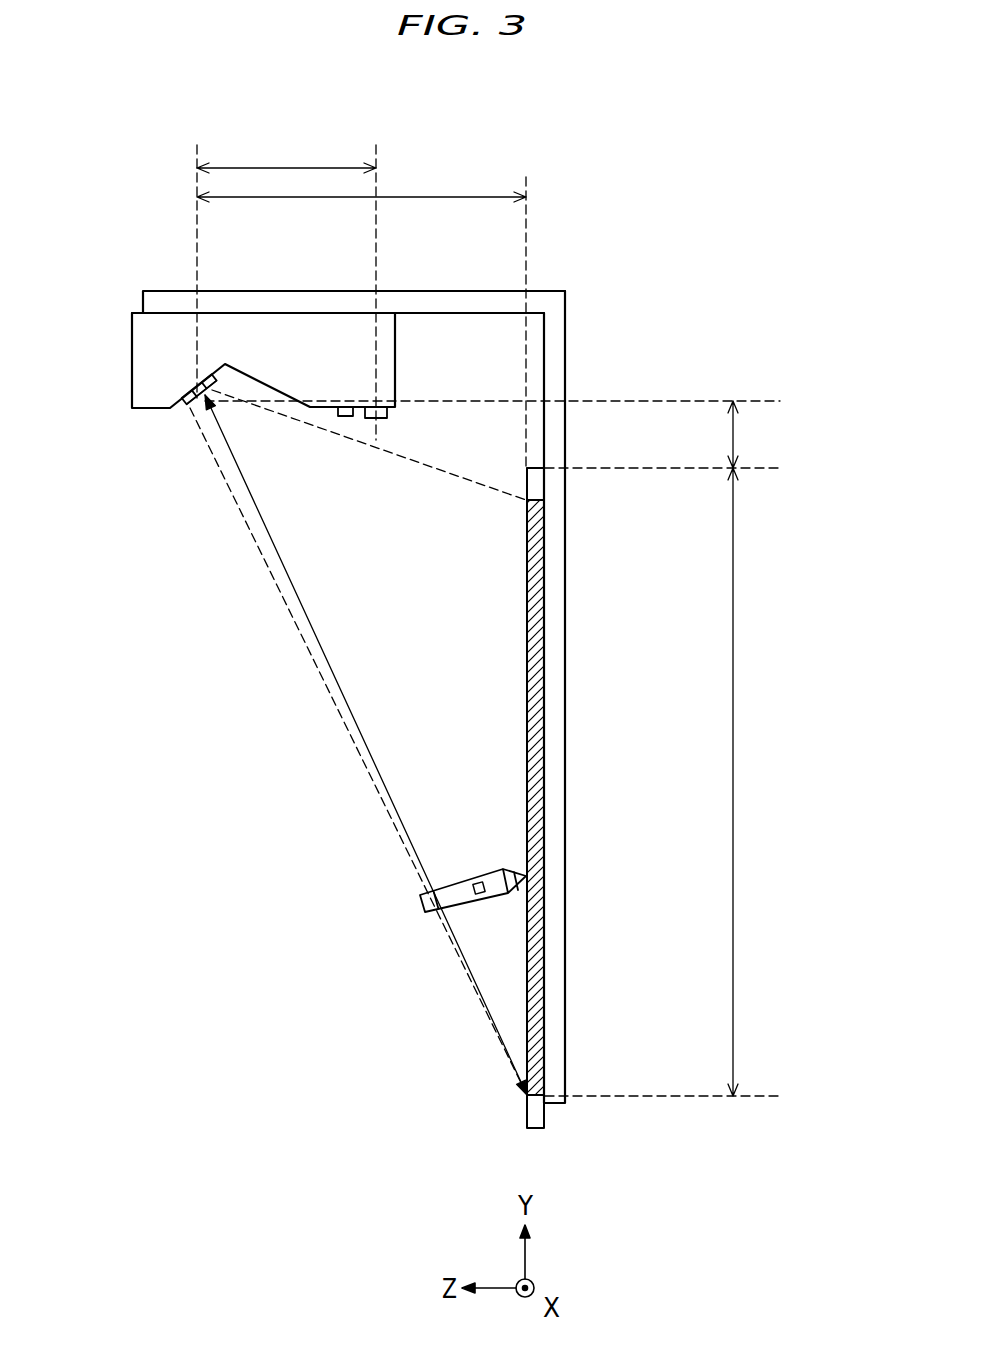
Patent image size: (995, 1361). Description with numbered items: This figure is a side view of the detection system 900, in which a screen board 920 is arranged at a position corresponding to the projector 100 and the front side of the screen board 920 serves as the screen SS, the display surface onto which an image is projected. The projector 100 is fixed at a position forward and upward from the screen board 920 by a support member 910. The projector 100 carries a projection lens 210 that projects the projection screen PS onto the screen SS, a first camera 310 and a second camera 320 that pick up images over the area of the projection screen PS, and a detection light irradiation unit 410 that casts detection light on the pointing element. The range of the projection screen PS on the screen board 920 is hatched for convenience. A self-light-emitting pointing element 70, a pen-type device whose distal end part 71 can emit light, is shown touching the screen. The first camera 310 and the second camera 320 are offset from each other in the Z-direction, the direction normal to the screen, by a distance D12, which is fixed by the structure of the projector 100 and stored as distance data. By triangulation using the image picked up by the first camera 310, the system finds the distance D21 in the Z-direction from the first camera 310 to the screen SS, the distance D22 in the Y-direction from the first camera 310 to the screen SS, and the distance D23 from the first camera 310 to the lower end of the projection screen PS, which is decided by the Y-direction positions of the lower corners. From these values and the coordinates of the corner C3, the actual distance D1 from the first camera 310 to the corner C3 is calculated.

The projector 100 is at (318, 327).
The detection system 900 is at (625, 323).
The support member 910 is at (555, 462).
The screen board 920 is at (535, 487).
The first camera 310 is at (183, 393).
The projection lens 210 is at (182, 412).
The second camera 320 is at (390, 413).
The detection light irradiation unit 410 is at (345, 417).
The self-light-emitting pointing element 70 is at (418, 903).
The distal end part 71 is at (520, 869).
The projection screen PS is at (527, 633).
The screen SS is at (532, 483).
The corner C3 is at (525, 1097).
The distance D1 is at (366, 745).
The distance D12 is at (287, 167).
The distance D21 is at (467, 195).
The distance D22 is at (735, 442).
The distance D23 is at (735, 628).